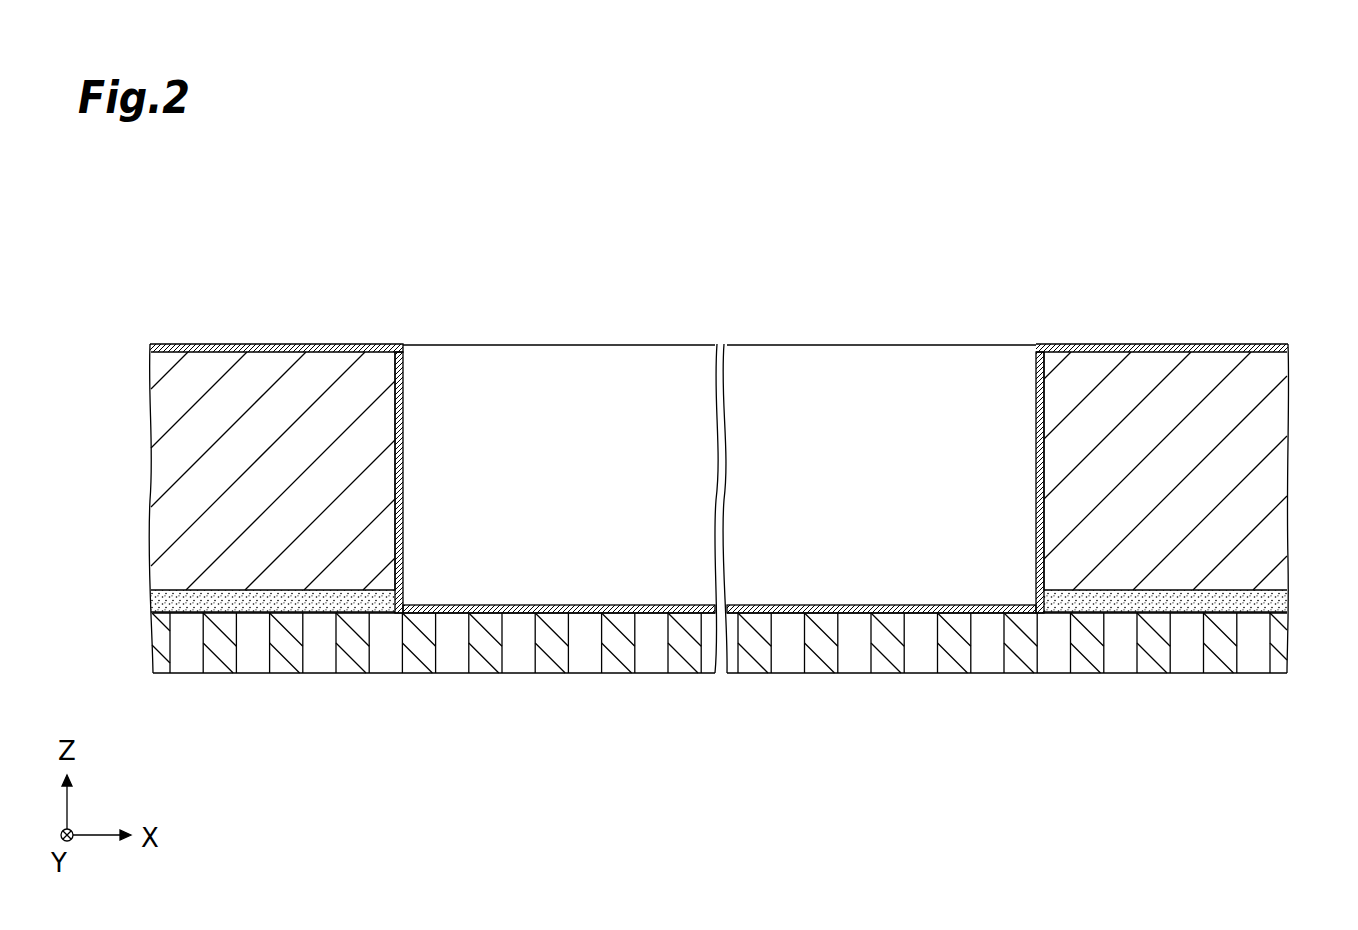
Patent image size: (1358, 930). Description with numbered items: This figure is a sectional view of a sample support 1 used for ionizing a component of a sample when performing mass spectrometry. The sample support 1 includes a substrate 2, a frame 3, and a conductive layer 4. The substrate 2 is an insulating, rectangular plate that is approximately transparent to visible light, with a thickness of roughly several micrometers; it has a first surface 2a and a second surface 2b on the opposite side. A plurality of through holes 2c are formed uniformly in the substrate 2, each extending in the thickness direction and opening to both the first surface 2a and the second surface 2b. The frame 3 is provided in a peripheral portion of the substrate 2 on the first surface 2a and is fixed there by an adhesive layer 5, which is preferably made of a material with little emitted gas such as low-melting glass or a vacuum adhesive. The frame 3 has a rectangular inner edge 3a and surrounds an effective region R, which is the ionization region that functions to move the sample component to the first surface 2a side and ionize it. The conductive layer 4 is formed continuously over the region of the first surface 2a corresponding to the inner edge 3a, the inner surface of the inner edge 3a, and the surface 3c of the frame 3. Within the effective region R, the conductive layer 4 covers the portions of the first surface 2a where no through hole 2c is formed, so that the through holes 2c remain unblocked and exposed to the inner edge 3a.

The sample support 1 is at (1064, 246).
The substrate 2 is at (1278, 642).
The first surface 2a is at (1288, 597).
The second surface 2b is at (1275, 676).
The through holes 2c is at (238, 650).
The frame 3 is at (1288, 465).
The inner edge 3a is at (403, 415).
The surface of the frame 3c is at (1257, 344).
The conductive layer 4 is at (560, 605).
The adhesive layer 5 is at (150, 600).
The effective region R is at (787, 605).